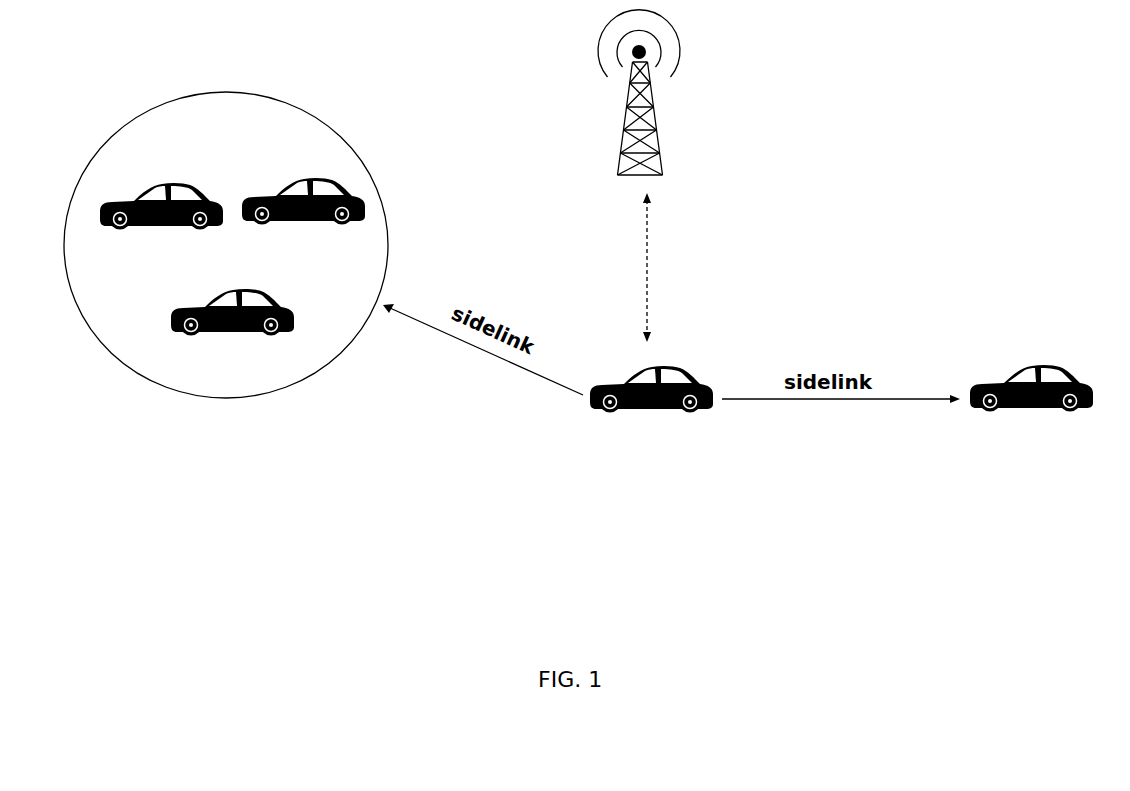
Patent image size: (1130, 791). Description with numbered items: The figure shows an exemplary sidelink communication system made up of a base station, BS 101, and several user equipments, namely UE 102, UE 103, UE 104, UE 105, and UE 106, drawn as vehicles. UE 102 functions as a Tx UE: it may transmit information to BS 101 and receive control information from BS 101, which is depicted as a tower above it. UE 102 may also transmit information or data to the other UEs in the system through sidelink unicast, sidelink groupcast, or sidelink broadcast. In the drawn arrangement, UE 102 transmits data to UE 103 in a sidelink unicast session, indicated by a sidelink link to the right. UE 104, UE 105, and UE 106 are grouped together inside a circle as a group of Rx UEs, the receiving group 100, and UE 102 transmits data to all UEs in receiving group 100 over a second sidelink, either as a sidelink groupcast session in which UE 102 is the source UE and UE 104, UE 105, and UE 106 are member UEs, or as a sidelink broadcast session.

The receiving group 100 is at (280, 95).
The BS 101 is at (659, 92).
The UE 102 is at (651, 415).
The UE 103 is at (1031, 412).
The UE 104 is at (161, 231).
The UE 105 is at (303, 227).
The UE 106 is at (232, 337).